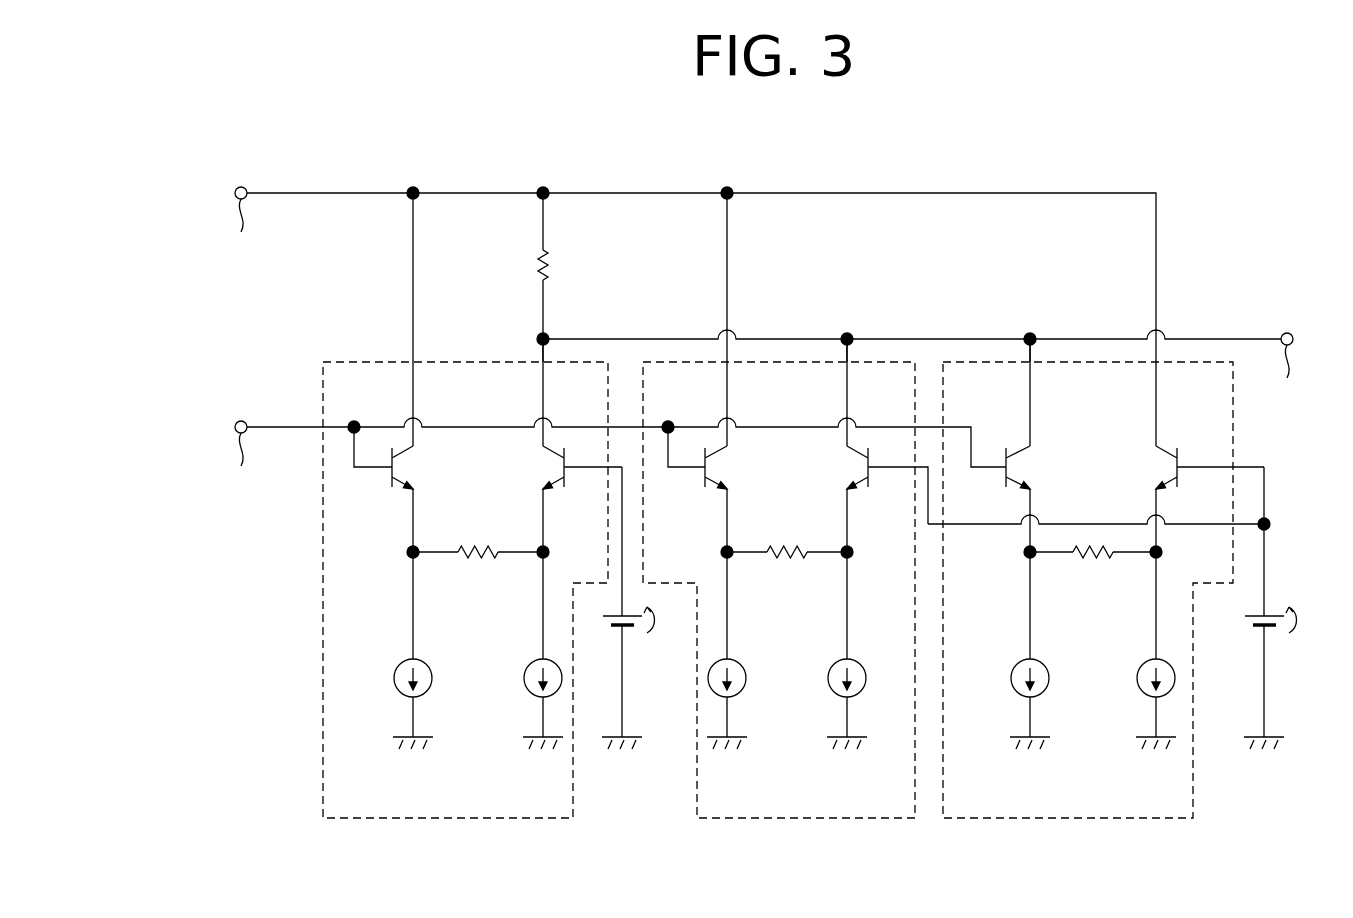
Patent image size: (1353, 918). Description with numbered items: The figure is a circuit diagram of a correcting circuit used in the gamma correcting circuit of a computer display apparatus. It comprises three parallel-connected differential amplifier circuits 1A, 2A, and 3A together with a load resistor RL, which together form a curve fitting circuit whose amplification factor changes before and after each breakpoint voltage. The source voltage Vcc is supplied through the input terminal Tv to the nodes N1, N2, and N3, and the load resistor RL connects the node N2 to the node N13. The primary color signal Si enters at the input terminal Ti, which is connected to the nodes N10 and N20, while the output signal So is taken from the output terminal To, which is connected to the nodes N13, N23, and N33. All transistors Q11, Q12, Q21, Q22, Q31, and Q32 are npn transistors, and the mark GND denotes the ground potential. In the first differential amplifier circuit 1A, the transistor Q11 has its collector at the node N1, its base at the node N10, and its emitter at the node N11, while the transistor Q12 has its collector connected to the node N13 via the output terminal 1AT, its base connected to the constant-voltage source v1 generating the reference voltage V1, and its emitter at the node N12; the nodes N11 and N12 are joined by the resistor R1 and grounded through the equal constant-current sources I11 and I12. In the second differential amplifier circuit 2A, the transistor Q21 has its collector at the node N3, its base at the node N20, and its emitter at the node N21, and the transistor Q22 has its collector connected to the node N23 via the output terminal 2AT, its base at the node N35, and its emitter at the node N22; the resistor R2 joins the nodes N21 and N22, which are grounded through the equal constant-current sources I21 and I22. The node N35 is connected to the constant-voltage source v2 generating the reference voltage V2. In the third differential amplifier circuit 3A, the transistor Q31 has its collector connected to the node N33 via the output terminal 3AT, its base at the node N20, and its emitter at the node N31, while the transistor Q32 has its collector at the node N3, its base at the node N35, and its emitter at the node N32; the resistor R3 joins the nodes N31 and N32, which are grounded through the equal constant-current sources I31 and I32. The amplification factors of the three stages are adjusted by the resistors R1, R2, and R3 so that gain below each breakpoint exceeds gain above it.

The source voltage Vcc is at (211, 193).
The input terminal for the source voltage Tv is at (237, 231).
The primary color signal Si is at (223, 427).
The input terminal Ti is at (237, 464).
The output signal So is at (1307, 340).
The output terminal To is at (1300, 379).
The node N1 is at (413, 177).
The node N2 is at (543, 177).
The node N3 is at (726, 177).
The node N13 is at (514, 340).
The node N23 is at (847, 321).
The node N33 is at (1030, 321).
The node N10 is at (363, 409).
The node N20 is at (678, 409).
The node N11 is at (382, 552).
The node N12 is at (572, 552).
The node N21 is at (699, 552).
The node N22 is at (876, 552).
The node N31 is at (1001, 552).
The node N32 is at (1185, 552).
The node N35 is at (1295, 525).
The load resistor RL is at (565, 267).
The resistor R1 is at (478, 571).
The resistor R2 is at (787, 571).
The resistor R3 is at (1093, 571).
The transistor Q11 is at (431, 467).
The transistor Q12 is at (530, 467).
The transistor Q21 is at (739, 467).
The transistor Q22 is at (834, 467).
The transistor Q31 is at (1043, 467).
The transistor Q32 is at (1142, 467).
The constant-current source I11 is at (390, 678).
The constant-current source I12 is at (520, 678).
The constant-current source I21 is at (743, 663).
The constant-current source I22 is at (823, 678).
The constant-current source I31 is at (1006, 678).
The constant-current source I32 is at (1132, 678).
The reference voltage V1 is at (648, 622).
The constant-voltage source v1 is at (598, 645).
The reference voltage V2 is at (1291, 623).
The constant-voltage source v2 is at (1228, 640).
The ground potential GND is at (838, 765).
The first differential amplifier circuit 1A is at (463, 818).
The second differential amplifier circuit 2A is at (808, 818).
The third differential amplifier circuit 3A is at (1086, 818).
The output terminal of the first differential amplifier circuit 1AT is at (543, 362).
The output terminal of the second differential amplifier circuit 2AT is at (847, 362).
The output terminal of the third differential amplifier circuit 3AT is at (1030, 362).